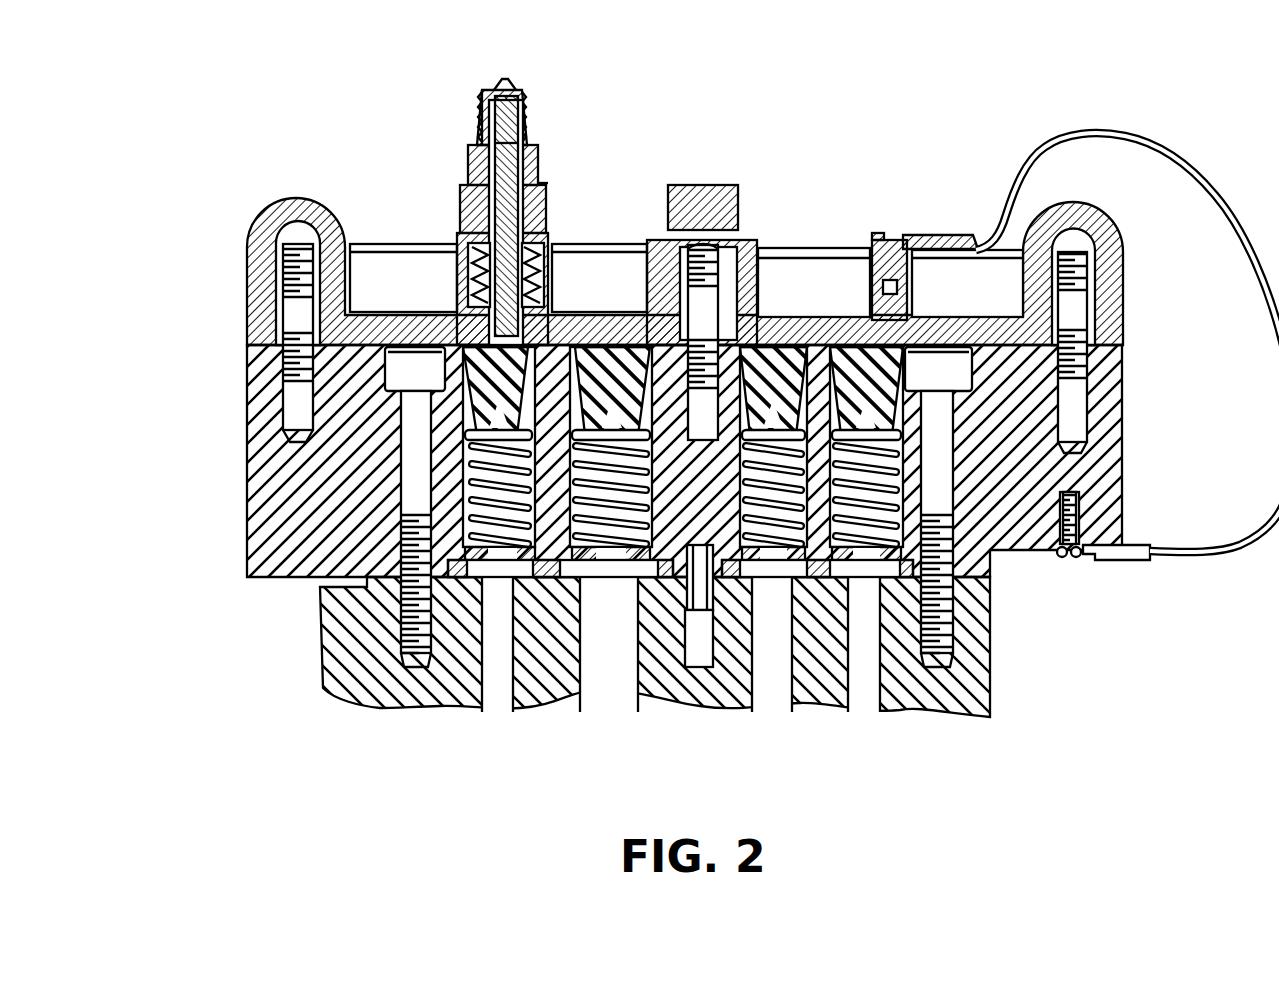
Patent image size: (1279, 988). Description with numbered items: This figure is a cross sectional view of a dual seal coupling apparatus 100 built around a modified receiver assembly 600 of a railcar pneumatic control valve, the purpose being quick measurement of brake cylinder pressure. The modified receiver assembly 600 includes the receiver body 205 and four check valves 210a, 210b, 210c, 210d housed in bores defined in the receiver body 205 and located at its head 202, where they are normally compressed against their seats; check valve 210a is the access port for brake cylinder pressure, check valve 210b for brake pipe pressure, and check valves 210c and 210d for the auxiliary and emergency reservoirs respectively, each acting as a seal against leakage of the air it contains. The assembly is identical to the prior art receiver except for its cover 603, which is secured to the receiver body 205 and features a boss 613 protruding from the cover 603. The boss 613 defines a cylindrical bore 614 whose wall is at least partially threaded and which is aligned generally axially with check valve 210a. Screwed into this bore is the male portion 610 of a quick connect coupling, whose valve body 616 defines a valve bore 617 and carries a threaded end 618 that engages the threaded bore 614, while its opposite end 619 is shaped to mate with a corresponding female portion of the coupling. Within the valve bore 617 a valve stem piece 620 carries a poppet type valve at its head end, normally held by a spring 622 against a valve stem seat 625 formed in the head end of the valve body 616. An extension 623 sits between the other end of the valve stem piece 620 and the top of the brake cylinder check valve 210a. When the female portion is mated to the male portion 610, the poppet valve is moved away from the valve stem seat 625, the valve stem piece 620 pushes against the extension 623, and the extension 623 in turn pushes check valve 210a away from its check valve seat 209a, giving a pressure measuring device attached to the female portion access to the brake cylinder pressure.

The dual seal coupling apparatus 100 is at (646, 393).
The head 202 is at (258, 332).
The receiver body 205 is at (1100, 455).
The check valve seat 209a is at (440, 410).
The check valve 210a is at (440, 447).
The check valve 210b is at (612, 330).
The check valve 210c is at (777, 340).
The check valve 210d is at (945, 340).
The modified receiver assembly 600 is at (646, 393).
The cover 603 is at (258, 272).
The male portion of quick connect coupling 610 is at (510, 203).
The boss 613 is at (460, 248).
The cylindrical bore 614 is at (493, 305).
The valve body 616 is at (470, 210).
The valve bore 617 is at (470, 178).
The threaded end 618 is at (522, 250).
The opposite end 619 is at (480, 97).
The valve stem piece 620 is at (521, 98).
The spring 622 is at (527, 128).
The extension 623 is at (540, 183).
The valve stem seat 625 is at (497, 85).